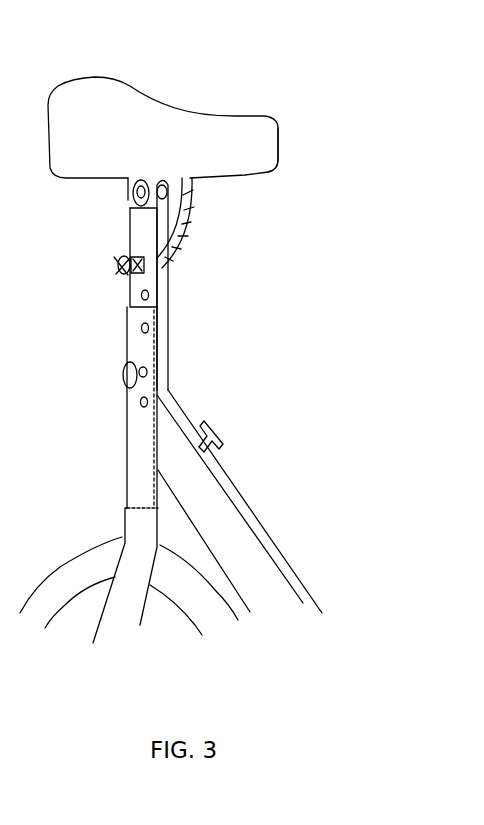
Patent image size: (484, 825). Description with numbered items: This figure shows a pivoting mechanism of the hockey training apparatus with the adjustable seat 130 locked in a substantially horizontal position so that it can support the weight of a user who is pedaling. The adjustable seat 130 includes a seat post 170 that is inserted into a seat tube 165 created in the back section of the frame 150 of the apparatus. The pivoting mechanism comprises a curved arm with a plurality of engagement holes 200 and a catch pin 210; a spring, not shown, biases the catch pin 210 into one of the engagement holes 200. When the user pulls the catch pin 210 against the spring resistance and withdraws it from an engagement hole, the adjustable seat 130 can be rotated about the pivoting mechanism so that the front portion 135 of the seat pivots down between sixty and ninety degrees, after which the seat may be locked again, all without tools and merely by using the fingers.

The adjustable seat 130 is at (107, 92).
The front portion 135 is at (257, 120).
The frame 150 is at (234, 515).
The seat tube 165 is at (136, 350).
The seat post 170 is at (135, 236).
The engagement holes 200 is at (194, 210).
The catch pin 210 is at (148, 276).